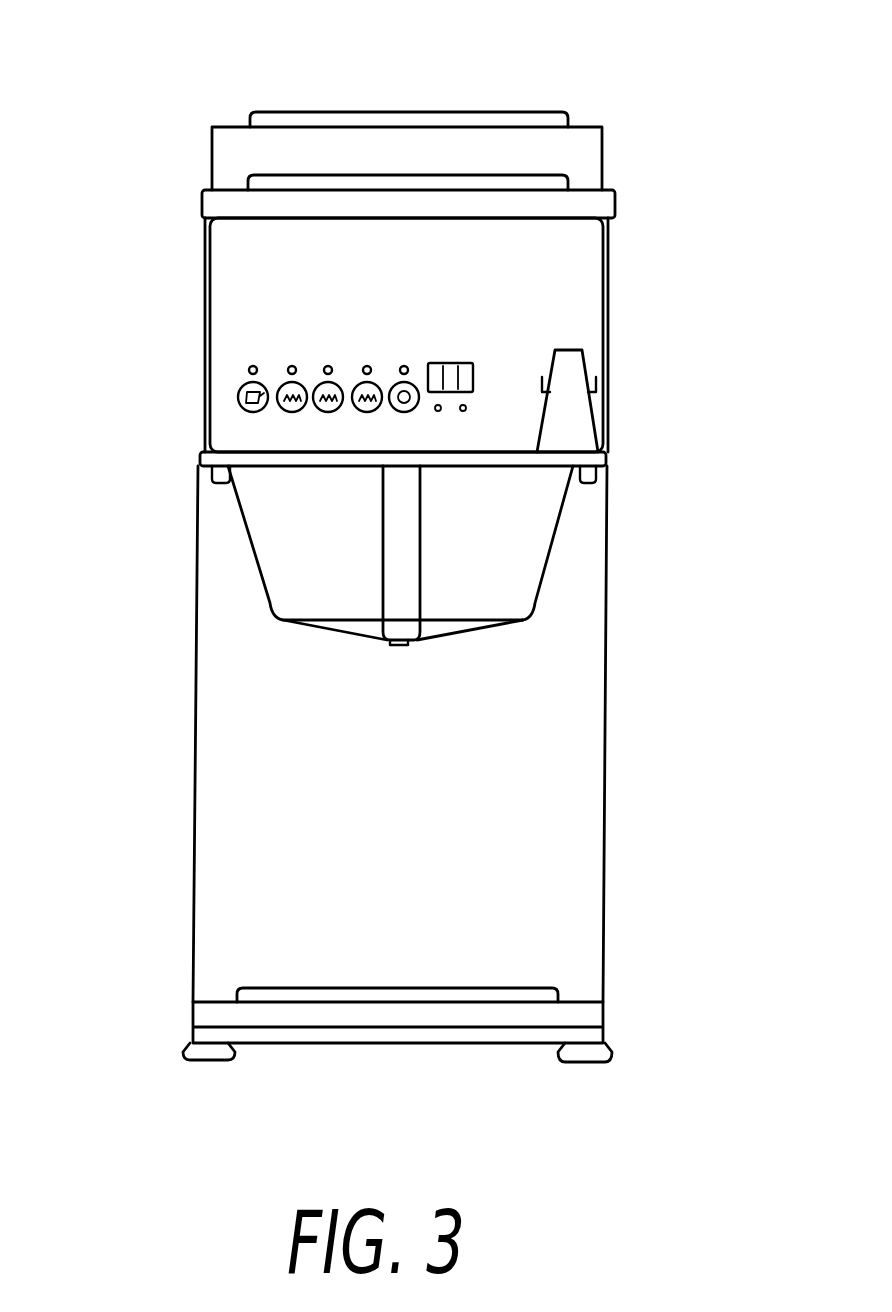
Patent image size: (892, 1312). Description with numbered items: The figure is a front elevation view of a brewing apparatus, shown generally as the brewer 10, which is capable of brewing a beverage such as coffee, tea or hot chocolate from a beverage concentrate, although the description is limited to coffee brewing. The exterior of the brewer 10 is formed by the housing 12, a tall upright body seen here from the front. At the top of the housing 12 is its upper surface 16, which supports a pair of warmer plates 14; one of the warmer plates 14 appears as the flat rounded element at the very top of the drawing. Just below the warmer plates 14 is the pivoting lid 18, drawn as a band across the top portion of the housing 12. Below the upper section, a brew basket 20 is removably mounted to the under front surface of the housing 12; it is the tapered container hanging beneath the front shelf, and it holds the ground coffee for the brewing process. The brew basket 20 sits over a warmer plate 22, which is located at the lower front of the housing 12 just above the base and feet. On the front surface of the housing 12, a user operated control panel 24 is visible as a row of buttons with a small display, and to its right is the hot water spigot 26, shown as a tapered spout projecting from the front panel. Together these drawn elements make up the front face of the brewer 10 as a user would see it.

The brewer 10 is at (648, 382).
The housing 12 is at (607, 728).
The warmer plates 14 is at (527, 120).
The upper surface 16 is at (580, 132).
The pivoting lid 18 is at (562, 188).
The brew basket 20 is at (500, 585).
The warmer plate 22 is at (417, 988).
The control panel 24 is at (235, 387).
The hot water spigot 26 is at (573, 435).